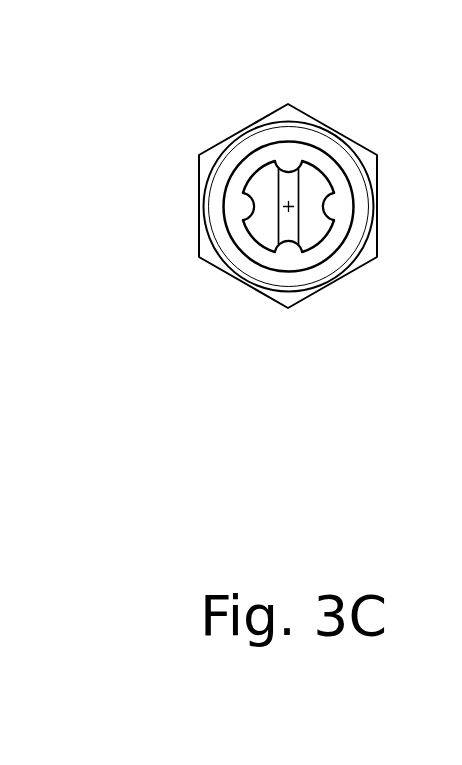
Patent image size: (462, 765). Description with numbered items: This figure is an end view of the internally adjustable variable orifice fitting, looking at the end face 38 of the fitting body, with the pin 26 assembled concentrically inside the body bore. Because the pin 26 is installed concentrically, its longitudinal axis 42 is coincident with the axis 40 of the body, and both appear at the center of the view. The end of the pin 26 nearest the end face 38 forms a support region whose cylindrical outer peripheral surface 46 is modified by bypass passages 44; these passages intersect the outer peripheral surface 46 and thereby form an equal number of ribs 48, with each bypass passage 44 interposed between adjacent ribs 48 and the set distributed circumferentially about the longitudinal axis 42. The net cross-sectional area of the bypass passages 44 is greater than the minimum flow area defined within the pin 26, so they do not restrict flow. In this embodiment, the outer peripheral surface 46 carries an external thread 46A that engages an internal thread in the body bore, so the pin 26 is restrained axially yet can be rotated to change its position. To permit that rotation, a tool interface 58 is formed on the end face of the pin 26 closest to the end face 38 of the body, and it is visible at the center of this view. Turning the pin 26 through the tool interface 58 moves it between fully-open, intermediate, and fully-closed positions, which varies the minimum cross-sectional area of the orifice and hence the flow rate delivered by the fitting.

The pin 26 is at (302, 190).
The end face 38 is at (249, 152).
The axis 40 is at (333, 264).
The longitudinal axis 42 is at (295, 214).
The bypass passages 44 is at (286, 162).
The outer peripheral surface 46 is at (192, 190).
The external thread 46A is at (238, 179).
The ribs 48 is at (315, 228).
The tool interface 58 is at (291, 230).